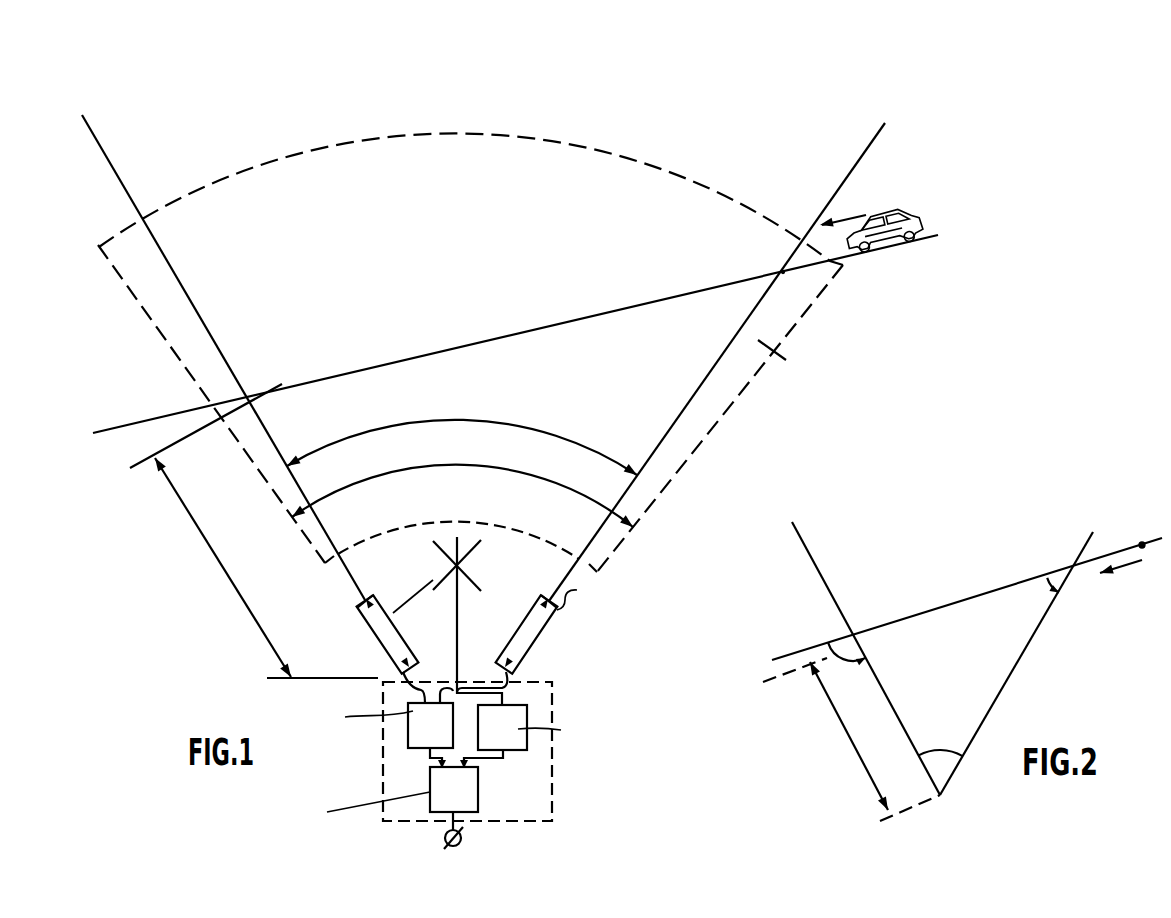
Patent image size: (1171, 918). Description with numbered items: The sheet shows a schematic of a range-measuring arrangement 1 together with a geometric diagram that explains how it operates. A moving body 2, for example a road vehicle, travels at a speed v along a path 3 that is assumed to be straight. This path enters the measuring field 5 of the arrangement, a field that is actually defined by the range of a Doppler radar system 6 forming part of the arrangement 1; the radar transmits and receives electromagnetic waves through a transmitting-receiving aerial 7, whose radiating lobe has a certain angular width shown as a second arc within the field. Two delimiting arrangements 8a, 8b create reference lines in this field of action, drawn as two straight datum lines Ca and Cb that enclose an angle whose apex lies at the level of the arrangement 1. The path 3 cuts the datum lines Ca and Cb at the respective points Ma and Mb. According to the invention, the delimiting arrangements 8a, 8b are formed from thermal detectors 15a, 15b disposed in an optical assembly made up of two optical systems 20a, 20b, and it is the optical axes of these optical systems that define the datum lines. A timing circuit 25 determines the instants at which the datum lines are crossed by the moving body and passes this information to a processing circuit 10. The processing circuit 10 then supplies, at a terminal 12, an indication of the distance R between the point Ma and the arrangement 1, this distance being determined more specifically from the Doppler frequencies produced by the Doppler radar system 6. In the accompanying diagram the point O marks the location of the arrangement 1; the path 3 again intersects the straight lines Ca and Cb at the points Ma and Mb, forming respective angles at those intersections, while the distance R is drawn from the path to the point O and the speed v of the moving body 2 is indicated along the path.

In FIG. 1, the arrangement 1 is at (540, 712).
In FIG. 1, the moving body 2 is at (893, 212).
In FIG. 1, the path 3 is at (666, 298).
In FIG. 2, the path 3 is at (1143, 544).
In FIG. 1, the measuring field 5 is at (784, 359).
In FIG. 1, the Doppler radar system 6 is at (518, 741).
In FIG. 1, the transmitting-receiving aerial 7 is at (460, 566).
In FIG. 1, the delimiting arrangement 8a is at (318, 618).
In FIG. 1, the delimiting arrangement 8b is at (524, 615).
In FIG. 1, the processing circuit 10 is at (470, 797).
In FIG. 1, the terminal 12 is at (461, 834).
In FIG. 1, the thermal detector 15a is at (405, 670).
In FIG. 1, the thermal detector 15b is at (506, 670).
In FIG. 1, the optical system 20a is at (377, 634).
In FIG. 1, the optical system 20b is at (538, 650).
In FIG. 1, the timing circuit 25 is at (408, 737).
In FIG. 1, the datum line Ca is at (173, 280).
In FIG. 2, the datum line Ca is at (813, 557).
In FIG. 1, the datum line Cb is at (835, 195).
In FIG. 2, the datum line Cb is at (1093, 540).
In FIG. 1, the crossing point Ma is at (248, 393).
In FIG. 2, the crossing point Ma is at (856, 633).
In FIG. 1, the crossing point Mb is at (784, 270).
In FIG. 2, the crossing point Mb is at (1070, 570).
In FIG. 1, the distance R is at (232, 576).
In FIG. 2, the distance R is at (854, 740).
In FIG. 1, the speed v is at (843, 210).
In FIG. 2, the speed v is at (1121, 578).
In FIG. 2, the location point of the arrangement O is at (948, 805).